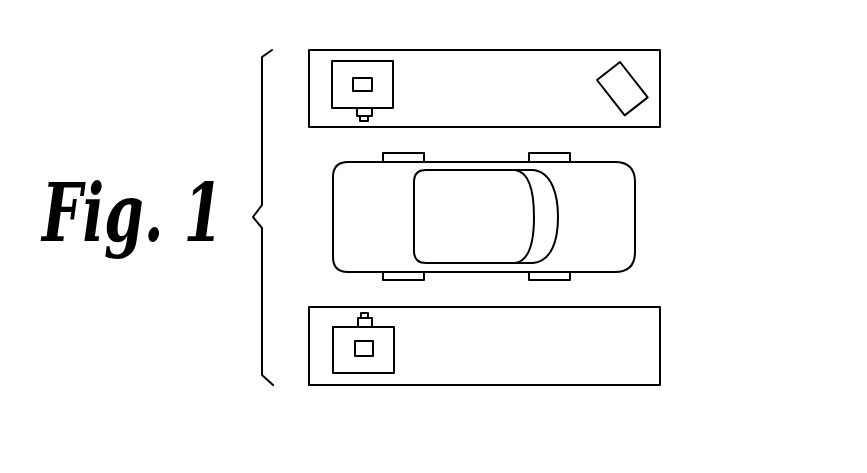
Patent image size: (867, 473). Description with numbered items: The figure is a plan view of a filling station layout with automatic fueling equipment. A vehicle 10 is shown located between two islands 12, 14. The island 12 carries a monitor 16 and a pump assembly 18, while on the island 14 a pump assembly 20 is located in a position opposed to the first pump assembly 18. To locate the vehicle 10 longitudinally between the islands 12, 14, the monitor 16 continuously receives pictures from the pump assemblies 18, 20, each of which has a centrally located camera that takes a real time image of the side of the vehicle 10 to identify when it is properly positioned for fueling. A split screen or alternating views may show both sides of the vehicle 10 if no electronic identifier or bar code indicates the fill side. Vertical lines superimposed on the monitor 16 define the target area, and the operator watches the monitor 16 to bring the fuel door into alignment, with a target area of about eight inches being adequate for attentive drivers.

The vehicle 10 is at (636, 210).
The island 12 is at (661, 87).
The island 14 is at (661, 348).
The monitor 16 is at (632, 72).
The pump assembly 18 is at (353, 61).
The pump assembly 20 is at (368, 373).